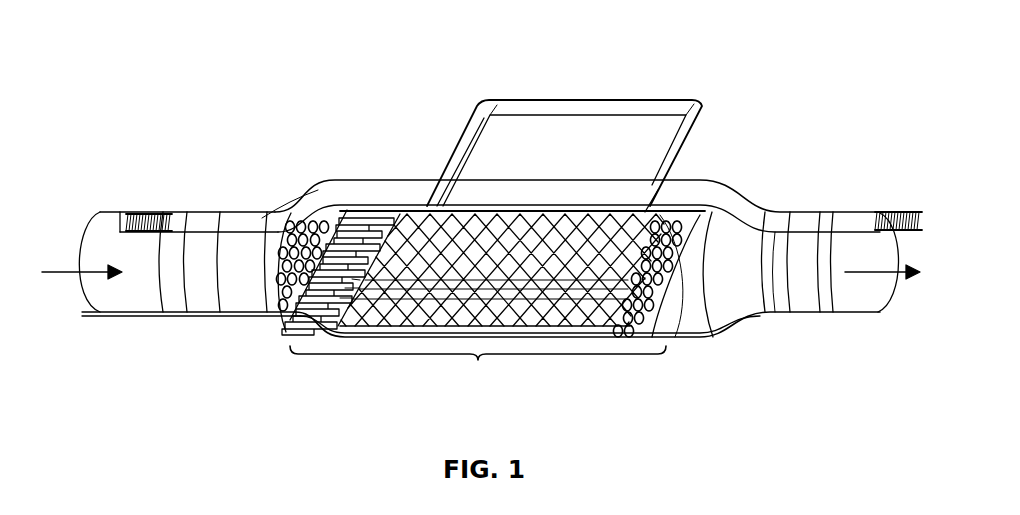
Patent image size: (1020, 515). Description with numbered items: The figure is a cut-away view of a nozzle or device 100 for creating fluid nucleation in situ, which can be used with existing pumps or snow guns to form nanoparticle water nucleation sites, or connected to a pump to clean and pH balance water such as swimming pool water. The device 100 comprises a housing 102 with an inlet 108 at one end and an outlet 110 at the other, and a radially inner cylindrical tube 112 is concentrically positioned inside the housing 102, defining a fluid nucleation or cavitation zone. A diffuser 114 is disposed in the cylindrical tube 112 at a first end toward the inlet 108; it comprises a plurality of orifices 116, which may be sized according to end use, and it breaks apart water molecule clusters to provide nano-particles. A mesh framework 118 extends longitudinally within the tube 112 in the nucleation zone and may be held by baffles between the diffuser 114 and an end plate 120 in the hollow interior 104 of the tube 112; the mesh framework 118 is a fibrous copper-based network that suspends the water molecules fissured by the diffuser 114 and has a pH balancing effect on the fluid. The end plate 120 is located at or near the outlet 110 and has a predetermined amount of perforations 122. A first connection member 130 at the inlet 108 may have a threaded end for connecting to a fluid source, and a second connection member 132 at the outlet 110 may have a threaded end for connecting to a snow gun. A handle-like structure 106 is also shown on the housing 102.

The device 100 is at (254, 44).
The housing 102 is at (380, 174).
The hollow interior 104 is at (556, 238).
The handle 106 is at (688, 212).
The inlet 108 is at (108, 264).
The outlet 110 is at (832, 280).
The cylindrical tube 112 is at (478, 369).
The diffuser 114 is at (335, 212).
The orifices 116 is at (272, 232).
The mesh framework 118 is at (470, 224).
The end plate 120 is at (660, 318).
The perforations 122 is at (676, 230).
The first connection member 130 is at (135, 212).
The second connection member 132 is at (888, 212).